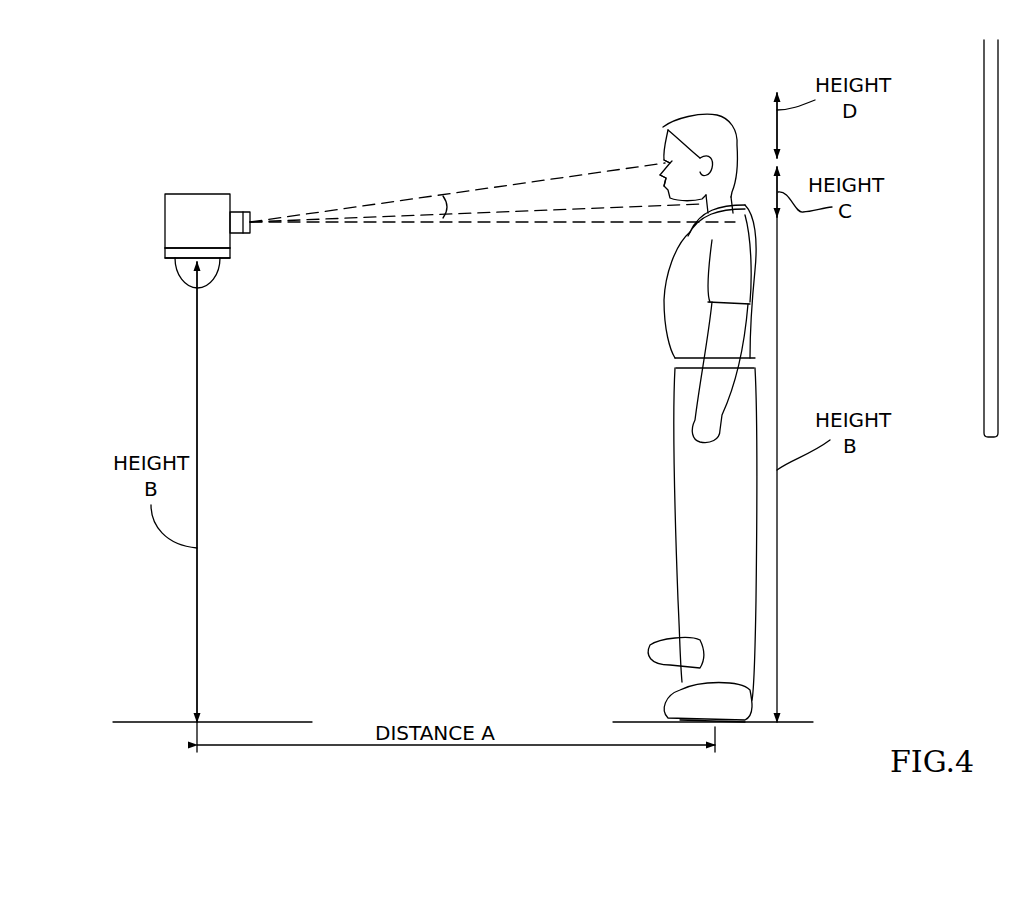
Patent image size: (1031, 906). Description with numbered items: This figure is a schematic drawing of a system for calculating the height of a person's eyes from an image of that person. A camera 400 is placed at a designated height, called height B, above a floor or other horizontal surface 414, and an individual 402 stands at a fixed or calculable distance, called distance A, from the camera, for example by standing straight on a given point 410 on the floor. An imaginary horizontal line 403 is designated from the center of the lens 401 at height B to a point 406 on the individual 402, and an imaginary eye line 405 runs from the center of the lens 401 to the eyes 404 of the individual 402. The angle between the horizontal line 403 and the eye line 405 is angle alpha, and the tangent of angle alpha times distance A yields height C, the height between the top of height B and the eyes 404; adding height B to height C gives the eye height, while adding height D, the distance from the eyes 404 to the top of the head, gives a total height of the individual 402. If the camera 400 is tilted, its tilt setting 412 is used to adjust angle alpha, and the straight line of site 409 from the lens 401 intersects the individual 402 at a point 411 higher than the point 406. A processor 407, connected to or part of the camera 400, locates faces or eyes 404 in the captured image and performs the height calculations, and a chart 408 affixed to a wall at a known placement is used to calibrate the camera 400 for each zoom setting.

The camera 400 is at (200, 194).
The lens 401 is at (250, 215).
The individual 402 is at (760, 342).
The horizontal line 403 is at (568, 222).
The eyes 404 is at (665, 160).
The eye line 405 is at (548, 180).
The point 406 is at (690, 238).
The processor 407 is at (165, 256).
The chart 408 is at (982, 210).
The line of site 409 is at (372, 216).
The point 410 is at (797, 722).
The point 411 is at (660, 180).
The tilt setting 412 is at (178, 276).
The floor 414 is at (167, 722).